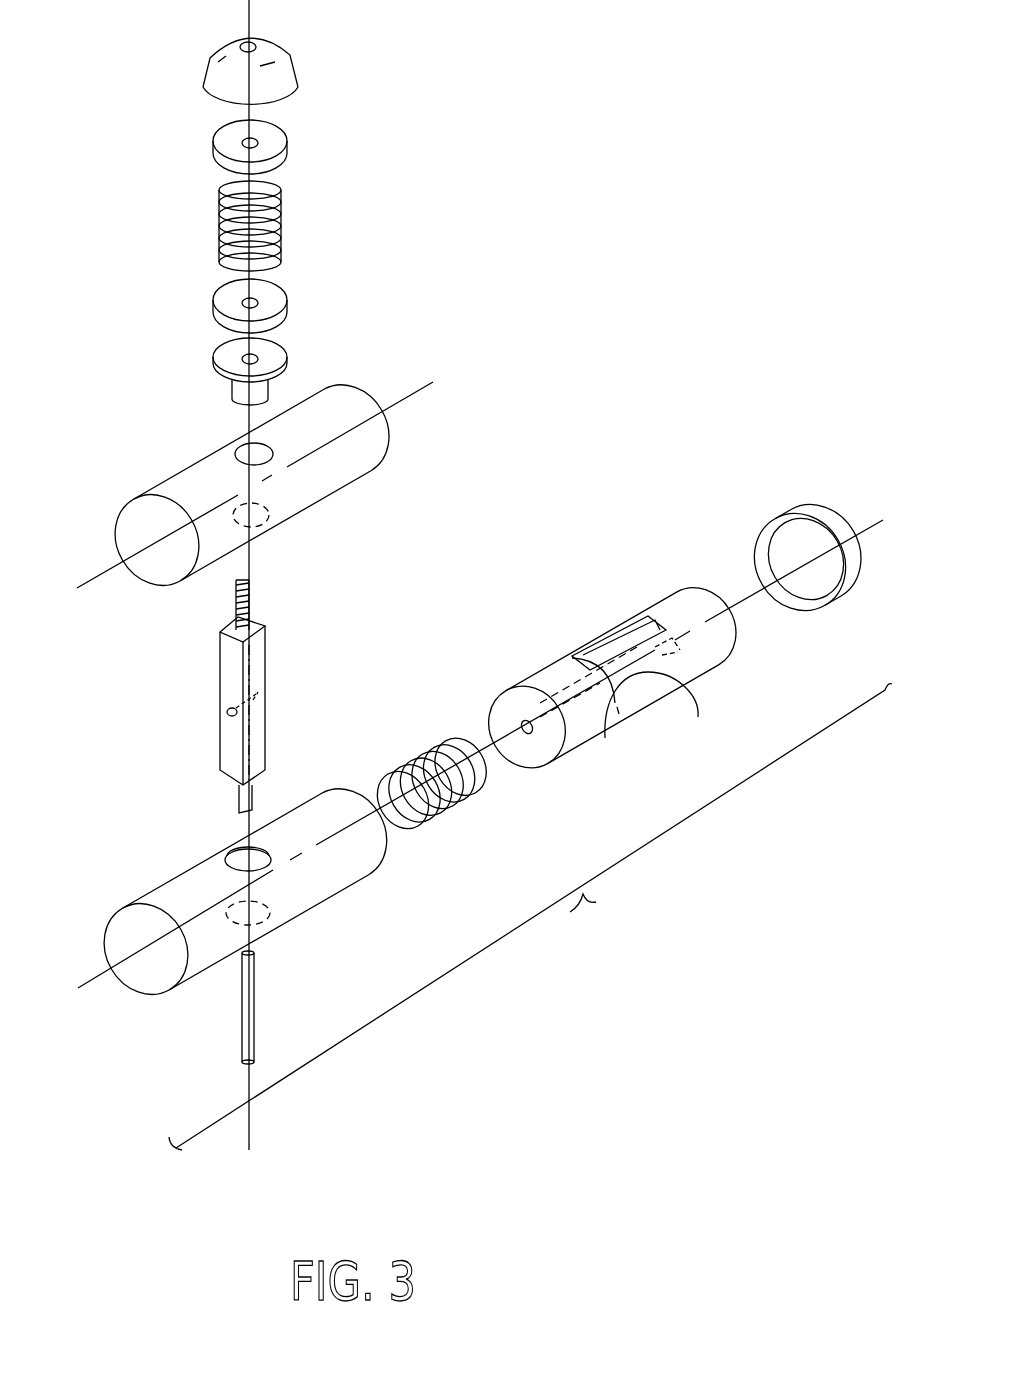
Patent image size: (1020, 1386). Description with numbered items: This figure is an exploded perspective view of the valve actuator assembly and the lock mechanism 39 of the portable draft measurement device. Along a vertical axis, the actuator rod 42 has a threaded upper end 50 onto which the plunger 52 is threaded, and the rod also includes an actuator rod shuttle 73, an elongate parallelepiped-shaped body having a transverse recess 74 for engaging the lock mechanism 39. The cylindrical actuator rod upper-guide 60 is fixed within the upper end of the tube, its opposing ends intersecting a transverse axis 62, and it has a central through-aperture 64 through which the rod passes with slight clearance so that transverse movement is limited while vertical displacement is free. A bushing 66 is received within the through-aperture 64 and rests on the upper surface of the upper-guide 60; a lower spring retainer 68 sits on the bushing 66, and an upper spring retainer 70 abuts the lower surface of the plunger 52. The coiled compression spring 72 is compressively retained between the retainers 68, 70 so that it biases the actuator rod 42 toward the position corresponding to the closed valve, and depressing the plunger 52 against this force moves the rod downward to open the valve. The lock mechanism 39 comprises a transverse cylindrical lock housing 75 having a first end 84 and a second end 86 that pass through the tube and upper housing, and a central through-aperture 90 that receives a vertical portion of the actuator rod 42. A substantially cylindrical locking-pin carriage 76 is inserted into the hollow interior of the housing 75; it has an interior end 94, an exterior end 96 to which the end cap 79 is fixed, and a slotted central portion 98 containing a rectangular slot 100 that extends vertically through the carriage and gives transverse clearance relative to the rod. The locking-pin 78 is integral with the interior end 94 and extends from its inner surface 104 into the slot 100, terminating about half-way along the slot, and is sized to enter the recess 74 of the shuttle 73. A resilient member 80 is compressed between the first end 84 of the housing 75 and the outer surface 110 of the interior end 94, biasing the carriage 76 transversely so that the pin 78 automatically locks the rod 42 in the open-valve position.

The lock mechanism 39 is at (530, 917).
The actuator rod 42 is at (240, 1042).
The threaded upper end 50 is at (238, 606).
The plunger 52 is at (208, 78).
The actuator rod upper-guide 60 is at (178, 478).
The transverse axis 62 is at (92, 580).
The central through-aperture 64 is at (240, 452).
The bushing 66 is at (212, 365).
The lower spring retainer 68 is at (215, 303).
The upper spring retainer 70 is at (215, 148).
The coiled compression spring 72 is at (220, 222).
The actuator rod shuttle 73 is at (220, 686).
The recess 74 is at (230, 713).
The lock housing 75 is at (210, 840).
The locking-pin carriage 76 is at (645, 594).
The locking-pin 78 is at (680, 680).
The end cap 79 is at (800, 612).
The resilient member 80 is at (414, 835).
The first end 84 is at (165, 886).
The second end 86 is at (312, 792).
The central through-aperture 90 is at (272, 915).
The interior end 94 is at (533, 770).
The exterior end 96 is at (700, 597).
The slotted central portion 98 is at (640, 703).
The slot 100 is at (612, 652).
The inner surface 104 is at (606, 740).
The outer surface 110 is at (508, 710).